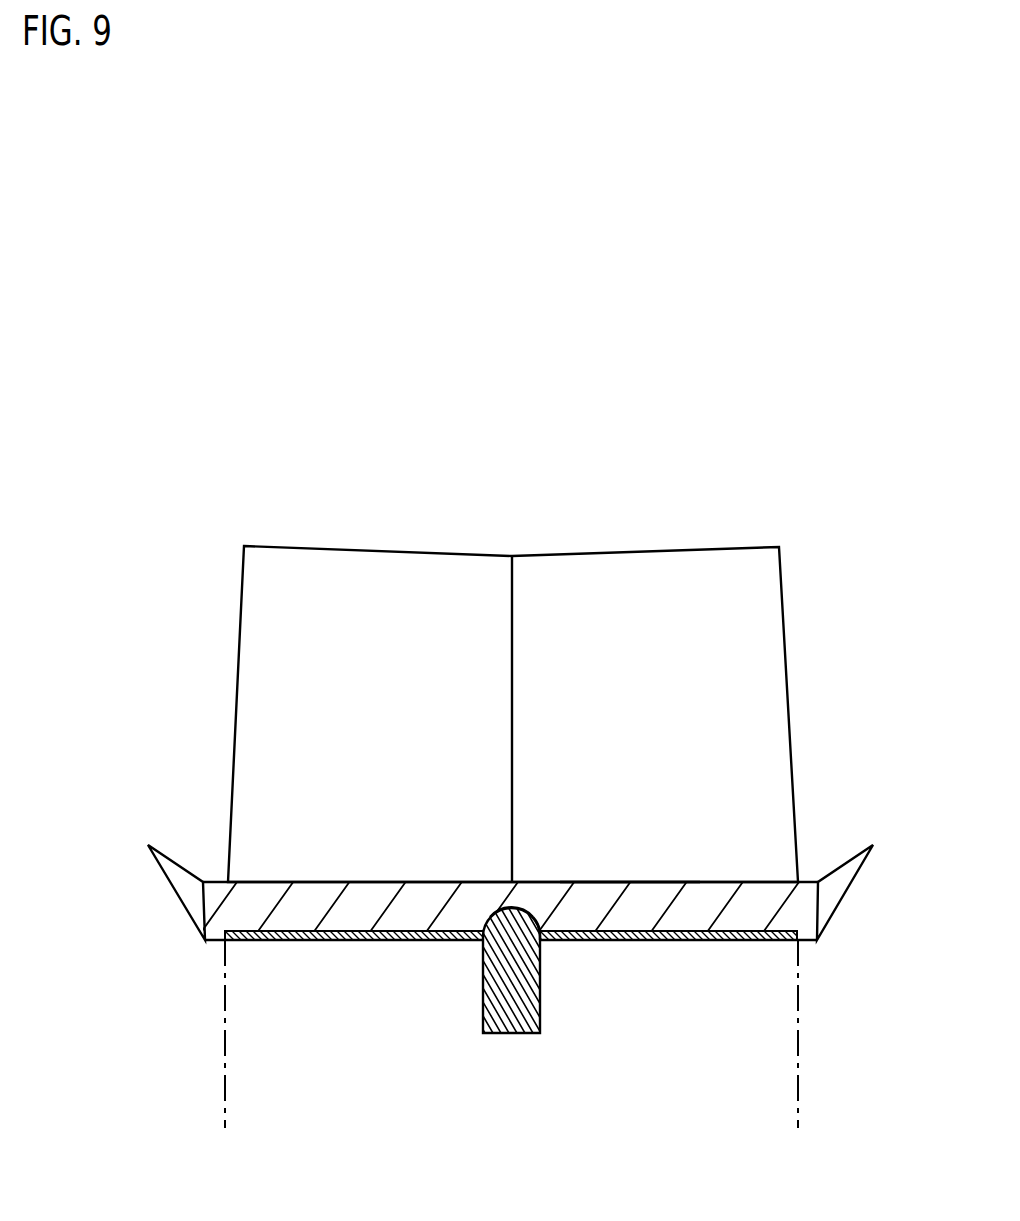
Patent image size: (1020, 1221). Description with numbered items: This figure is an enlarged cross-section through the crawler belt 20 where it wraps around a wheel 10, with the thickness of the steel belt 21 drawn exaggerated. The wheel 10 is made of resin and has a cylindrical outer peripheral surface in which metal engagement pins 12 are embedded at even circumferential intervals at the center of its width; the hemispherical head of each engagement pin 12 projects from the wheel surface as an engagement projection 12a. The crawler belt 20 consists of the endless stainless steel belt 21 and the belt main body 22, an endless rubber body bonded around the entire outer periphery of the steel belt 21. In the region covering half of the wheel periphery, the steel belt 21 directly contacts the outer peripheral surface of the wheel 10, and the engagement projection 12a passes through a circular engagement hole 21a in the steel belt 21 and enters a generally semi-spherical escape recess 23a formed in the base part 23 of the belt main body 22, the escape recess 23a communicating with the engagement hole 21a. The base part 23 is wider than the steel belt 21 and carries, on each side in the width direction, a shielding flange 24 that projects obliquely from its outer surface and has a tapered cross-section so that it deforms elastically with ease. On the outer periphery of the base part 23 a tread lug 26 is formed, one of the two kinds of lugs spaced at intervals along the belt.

The wheel 10 is at (798, 970).
The engagement pin 12 is at (506, 924).
The engagement projection 12a is at (490, 916).
The crawler belt 20 is at (526, 875).
The steel belt 21 is at (630, 941).
The engagement hole 21a is at (528, 940).
The belt main body 22 is at (617, 881).
The base part 23 is at (373, 882).
The escape recess 23a is at (535, 915).
The shielding flange 24 is at (183, 868).
The tread lug 26 is at (658, 547).